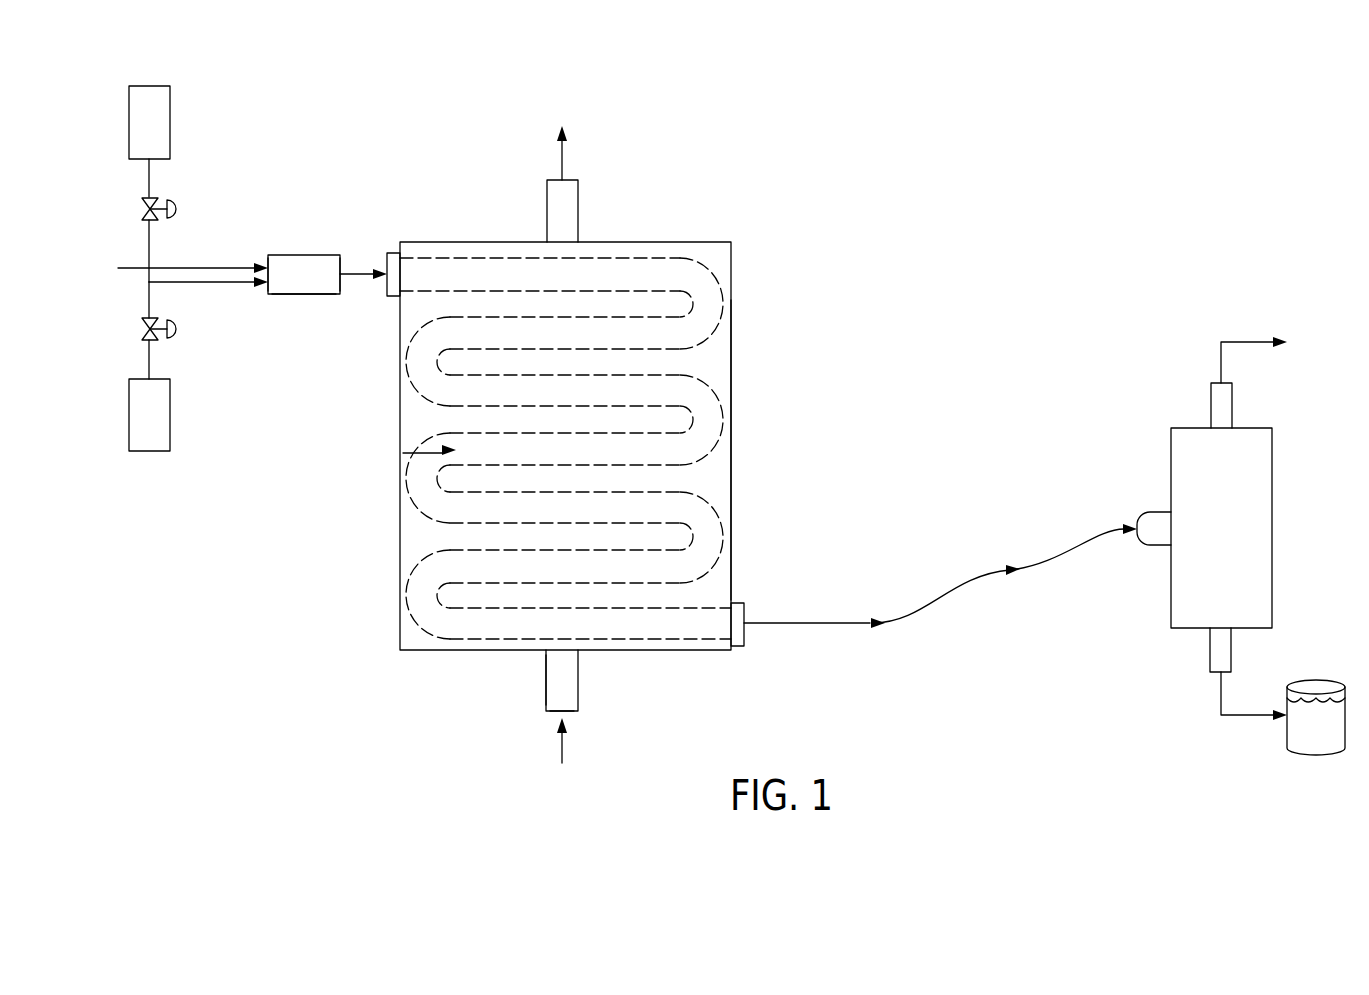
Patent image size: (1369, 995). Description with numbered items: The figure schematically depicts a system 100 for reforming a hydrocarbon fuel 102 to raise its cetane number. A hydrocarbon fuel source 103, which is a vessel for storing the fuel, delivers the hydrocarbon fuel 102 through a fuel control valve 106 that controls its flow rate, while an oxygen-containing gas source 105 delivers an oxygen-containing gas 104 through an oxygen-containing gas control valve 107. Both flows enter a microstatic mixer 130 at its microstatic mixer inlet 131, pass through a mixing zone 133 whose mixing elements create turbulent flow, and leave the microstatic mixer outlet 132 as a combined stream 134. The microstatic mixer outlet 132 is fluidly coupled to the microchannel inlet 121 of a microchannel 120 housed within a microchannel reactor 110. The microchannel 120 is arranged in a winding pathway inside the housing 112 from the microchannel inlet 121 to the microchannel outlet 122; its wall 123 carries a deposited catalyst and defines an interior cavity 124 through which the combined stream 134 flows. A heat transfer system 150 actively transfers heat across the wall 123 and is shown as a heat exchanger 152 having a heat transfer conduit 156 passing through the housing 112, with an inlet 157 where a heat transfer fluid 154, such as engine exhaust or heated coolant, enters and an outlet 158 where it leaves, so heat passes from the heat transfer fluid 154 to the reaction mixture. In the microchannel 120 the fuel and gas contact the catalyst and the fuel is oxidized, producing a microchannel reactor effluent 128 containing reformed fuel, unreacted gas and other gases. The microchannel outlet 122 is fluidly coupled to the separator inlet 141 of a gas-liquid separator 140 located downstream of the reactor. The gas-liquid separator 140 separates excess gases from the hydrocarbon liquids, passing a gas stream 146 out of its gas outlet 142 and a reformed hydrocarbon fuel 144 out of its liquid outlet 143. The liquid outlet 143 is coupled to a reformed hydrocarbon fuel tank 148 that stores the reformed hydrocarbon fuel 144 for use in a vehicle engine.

The system 100 is at (1194, 251).
The hydrocarbon fuel 102 is at (183, 267).
The hydrocarbon fuel source 103 is at (170, 125).
The oxygen-containing gas 104 is at (150, 358).
The oxygen-containing gas source 105 is at (170, 415).
The fuel control valve 106 is at (178, 212).
The oxygen-containing gas control valve 107 is at (178, 330).
The microchannel reactor 110 is at (744, 246).
The housing 112 is at (731, 447).
The microchannel 120 is at (710, 337).
The microchannel inlet 121 is at (393, 252).
The microchannel outlet 122 is at (741, 648).
The wall 123 is at (406, 362).
The interior cavity 124 is at (403, 453).
The microchannel reactor effluent 128 is at (838, 623).
The microstatic mixer 130 is at (303, 255).
The microstatic mixer inlet 131 is at (268, 263).
The microstatic mixer outlet 132 is at (341, 290).
The mixing zone 133 is at (300, 295).
The combined stream 134 is at (357, 270).
The gas-liquid separator 140 is at (1124, 414).
The separator inlet 141 is at (1155, 512).
The gas outlet 142 is at (1211, 410).
The liquid outlet 143 is at (1210, 648).
The reformed hydrocarbon fuel 144 is at (1222, 718).
The gas stream 146 is at (1247, 342).
The reformed hydrocarbon fuel tank 148 is at (1317, 681).
The heat transfer system 150 is at (533, 207).
The heat exchanger 152 is at (546, 680).
The heat transfer fluid 154 is at (563, 745).
The heat transfer conduit 156 is at (578, 680).
The inlet 157 is at (548, 713).
The outlet 158 is at (576, 180).